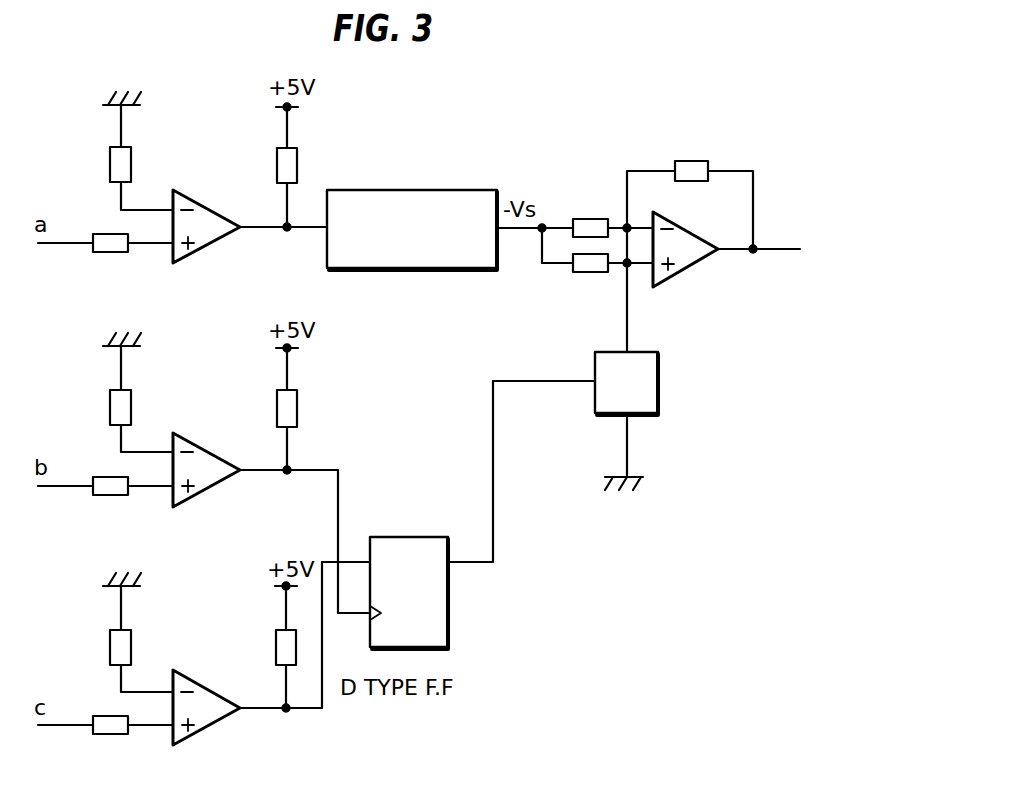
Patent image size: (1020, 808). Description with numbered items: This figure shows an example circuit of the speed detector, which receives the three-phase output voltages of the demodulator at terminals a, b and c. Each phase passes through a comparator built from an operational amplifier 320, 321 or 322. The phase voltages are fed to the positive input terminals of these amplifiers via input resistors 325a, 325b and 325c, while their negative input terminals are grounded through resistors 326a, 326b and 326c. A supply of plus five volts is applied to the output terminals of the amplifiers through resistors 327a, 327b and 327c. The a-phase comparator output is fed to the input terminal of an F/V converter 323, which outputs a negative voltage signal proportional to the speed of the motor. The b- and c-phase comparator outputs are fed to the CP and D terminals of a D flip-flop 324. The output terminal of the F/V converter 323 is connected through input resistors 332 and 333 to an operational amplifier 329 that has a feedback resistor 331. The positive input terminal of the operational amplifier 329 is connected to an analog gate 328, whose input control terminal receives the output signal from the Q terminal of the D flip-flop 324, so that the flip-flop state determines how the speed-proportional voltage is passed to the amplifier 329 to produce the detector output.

The operational amplifier 320 is at (195, 198).
The operational amplifier 321 is at (195, 441).
The operational amplifier 322 is at (195, 681).
The F/V converter 323 is at (412, 190).
The D flip-flop 324 is at (386, 537).
The input resistor 325a is at (106, 253).
The input resistor 325b is at (106, 496).
The input resistor 325c is at (106, 735).
The resistor 326a is at (110, 161).
The resistor 326b is at (110, 404).
The resistor 326c is at (110, 644).
The resistor 327a is at (277, 162).
The resistor 327b is at (277, 404).
The resistor 327c is at (276, 644).
The analog gate 328 is at (650, 352).
The operational amplifier 329 is at (690, 270).
The feedback resistor 331 is at (697, 161).
The input resistor 332 is at (588, 219).
The input resistor 333 is at (588, 272).